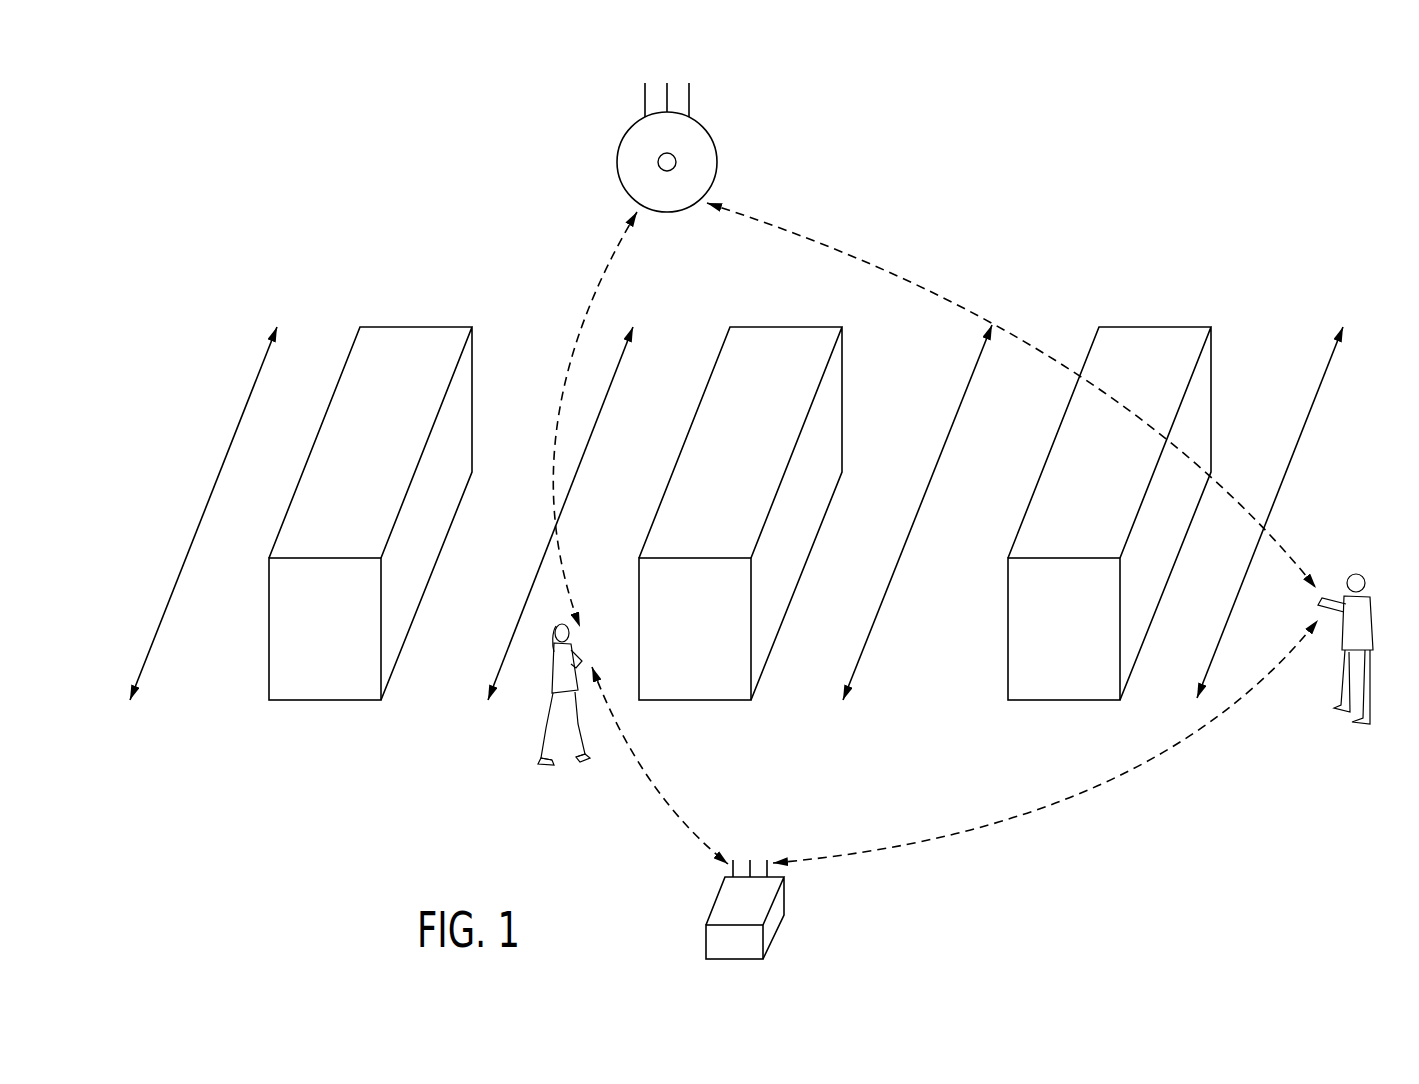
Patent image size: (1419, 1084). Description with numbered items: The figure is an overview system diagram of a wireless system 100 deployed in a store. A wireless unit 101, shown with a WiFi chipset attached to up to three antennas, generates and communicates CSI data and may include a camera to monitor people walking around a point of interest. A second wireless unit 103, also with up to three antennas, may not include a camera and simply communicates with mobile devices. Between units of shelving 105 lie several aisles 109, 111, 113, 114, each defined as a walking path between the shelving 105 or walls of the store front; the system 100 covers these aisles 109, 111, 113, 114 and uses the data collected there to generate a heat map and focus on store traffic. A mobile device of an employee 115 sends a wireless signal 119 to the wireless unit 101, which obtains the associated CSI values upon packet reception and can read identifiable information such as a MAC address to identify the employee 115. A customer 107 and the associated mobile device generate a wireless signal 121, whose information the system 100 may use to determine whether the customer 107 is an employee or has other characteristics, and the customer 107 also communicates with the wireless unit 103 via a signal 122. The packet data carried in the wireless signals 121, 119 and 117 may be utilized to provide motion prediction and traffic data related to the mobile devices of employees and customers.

The wireless system 100 is at (525, 123).
The wireless unit 101 is at (712, 131).
The wireless unit 103 is at (773, 917).
The shelving 105 is at (327, 702).
The customer 107 is at (548, 714).
The aisle 109 is at (222, 466).
The aisle 111 is at (543, 543).
The aisle 113 is at (910, 530).
The aisle 114 is at (1290, 462).
The employee 115 is at (1372, 640).
The wireless signal 117 is at (1150, 758).
The wireless signal 119 is at (918, 288).
The wireless signal 121 is at (597, 287).
The signal 122 is at (658, 793).